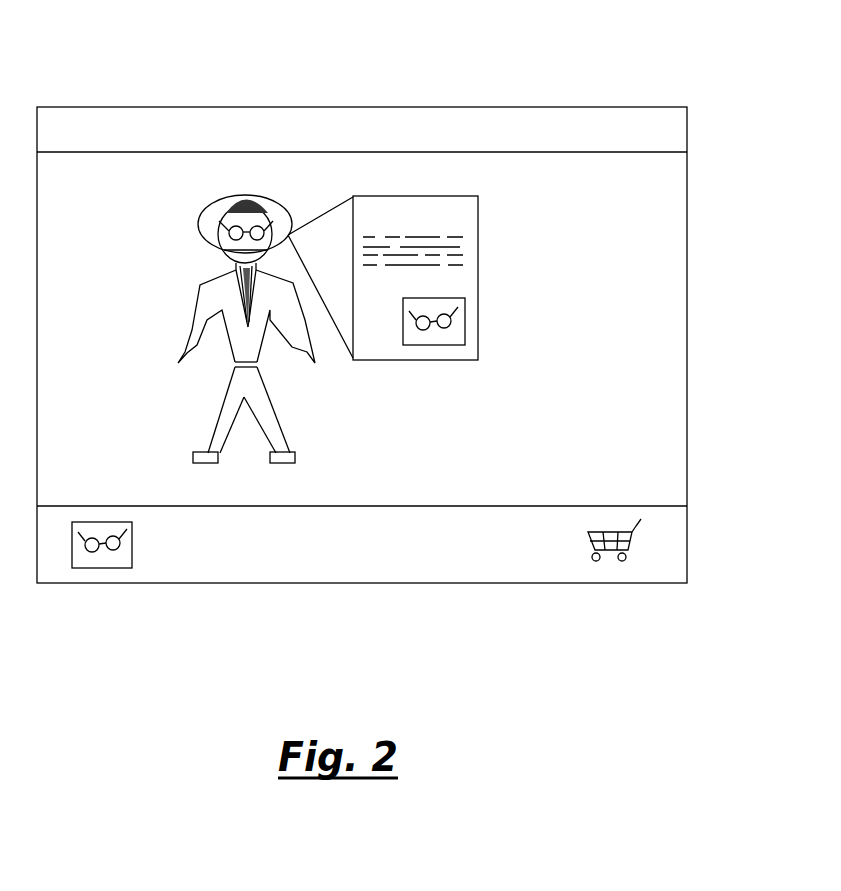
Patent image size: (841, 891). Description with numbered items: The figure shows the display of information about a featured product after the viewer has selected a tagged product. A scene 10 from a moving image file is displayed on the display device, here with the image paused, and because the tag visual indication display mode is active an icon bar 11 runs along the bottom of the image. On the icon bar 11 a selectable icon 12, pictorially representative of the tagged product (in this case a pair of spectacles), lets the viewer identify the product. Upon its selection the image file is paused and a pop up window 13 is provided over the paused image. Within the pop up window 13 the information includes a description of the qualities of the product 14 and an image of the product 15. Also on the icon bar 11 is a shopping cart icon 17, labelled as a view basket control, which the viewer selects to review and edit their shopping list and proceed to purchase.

The scene 10 is at (104, 172).
The icon bar 11 is at (370, 584).
The selectable icon 12 is at (87, 559).
The pop up window 13 is at (428, 196).
The description of the qualities of the product 14 is at (463, 250).
The image of the product 15 is at (465, 316).
The shopping cart icon 17 is at (634, 535).